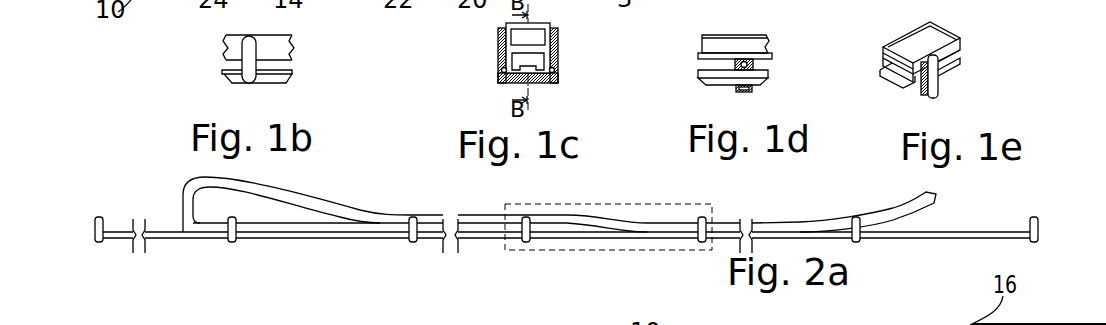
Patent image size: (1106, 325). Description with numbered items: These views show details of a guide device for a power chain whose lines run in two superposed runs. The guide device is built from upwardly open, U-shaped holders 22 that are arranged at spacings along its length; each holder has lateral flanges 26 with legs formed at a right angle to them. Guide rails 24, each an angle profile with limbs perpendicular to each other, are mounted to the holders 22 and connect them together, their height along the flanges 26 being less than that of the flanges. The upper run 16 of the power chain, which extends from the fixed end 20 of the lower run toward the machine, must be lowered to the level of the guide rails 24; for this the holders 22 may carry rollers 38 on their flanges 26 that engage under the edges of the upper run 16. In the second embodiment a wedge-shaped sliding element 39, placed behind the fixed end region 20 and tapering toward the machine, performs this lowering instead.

In FIG. 1b, the upper run 16 is at (224, 45).
In FIG. 1e, the upper run 16 is at (955, 50).
In FIG. 2a, the free end of the lower run 20 is at (510, 228).
In FIG. 1b, the holder 22 is at (245, 82).
In FIG. 1c, the holder 22 is at (490, 61).
In FIG. 1e, the holder 22 is at (940, 88).
In FIG. 2a, the holder 22 is at (233, 242).
In FIG. 1b, the guide rail 24 is at (288, 79).
In FIG. 1c, the guide rail 24 is at (505, 77).
In FIG. 1d, the guide rail 24 is at (715, 74).
In FIG. 1e, the guide rail 24 is at (956, 75).
In FIG. 1c, the lateral flange 26 is at (498, 35).
In FIG. 1c, the roller 38 is at (553, 53).
In FIG. 1d, the roller 38 is at (754, 67).
In FIG. 2a, the sliding element 39 is at (535, 237).